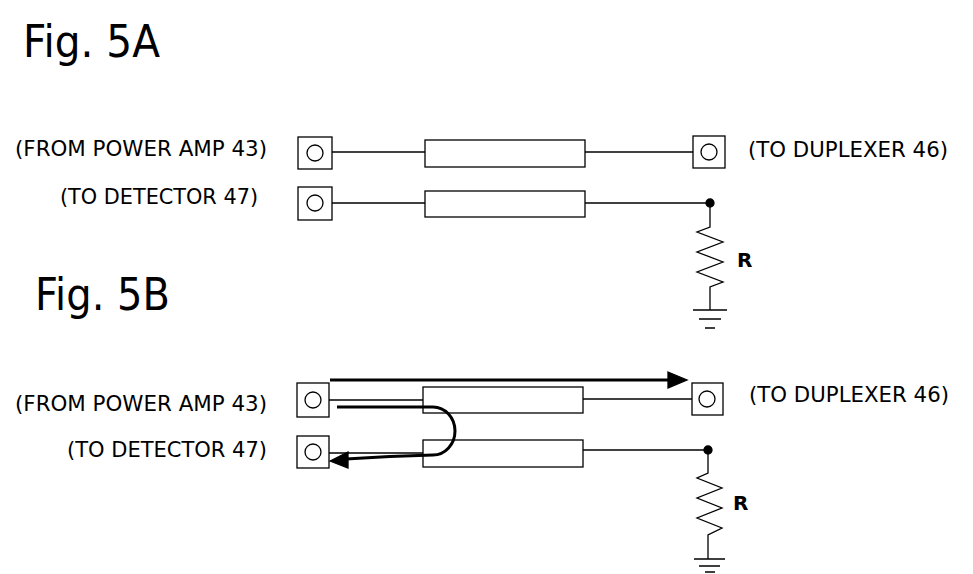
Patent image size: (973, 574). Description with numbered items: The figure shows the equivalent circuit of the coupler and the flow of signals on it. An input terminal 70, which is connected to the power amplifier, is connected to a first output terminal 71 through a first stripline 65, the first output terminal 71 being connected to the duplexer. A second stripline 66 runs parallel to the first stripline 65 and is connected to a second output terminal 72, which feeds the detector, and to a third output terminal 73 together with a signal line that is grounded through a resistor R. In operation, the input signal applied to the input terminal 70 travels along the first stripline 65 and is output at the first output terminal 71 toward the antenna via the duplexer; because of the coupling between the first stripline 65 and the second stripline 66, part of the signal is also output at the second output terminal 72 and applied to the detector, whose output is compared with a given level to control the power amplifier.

In FIG. 5A, the first stripline 65 is at (521, 142).
In FIG. 5B, the first stripline 65 is at (518, 392).
In FIG. 5A, the second stripline 66 is at (535, 213).
In FIG. 5B, the second stripline 66 is at (532, 462).
In FIG. 5A, the input terminal 70 is at (313, 136).
In FIG. 5B, the input terminal 70 is at (313, 382).
In FIG. 5A, the first output terminal 71 is at (711, 135).
In FIG. 5B, the first output terminal 71 is at (708, 383).
In FIG. 5A, the second output terminal 72 is at (313, 224).
In FIG. 5B, the second output terminal 72 is at (313, 470).
In FIG. 5A, the third output terminal 73 is at (714, 202).
In FIG. 5B, the third output terminal 73 is at (712, 449).